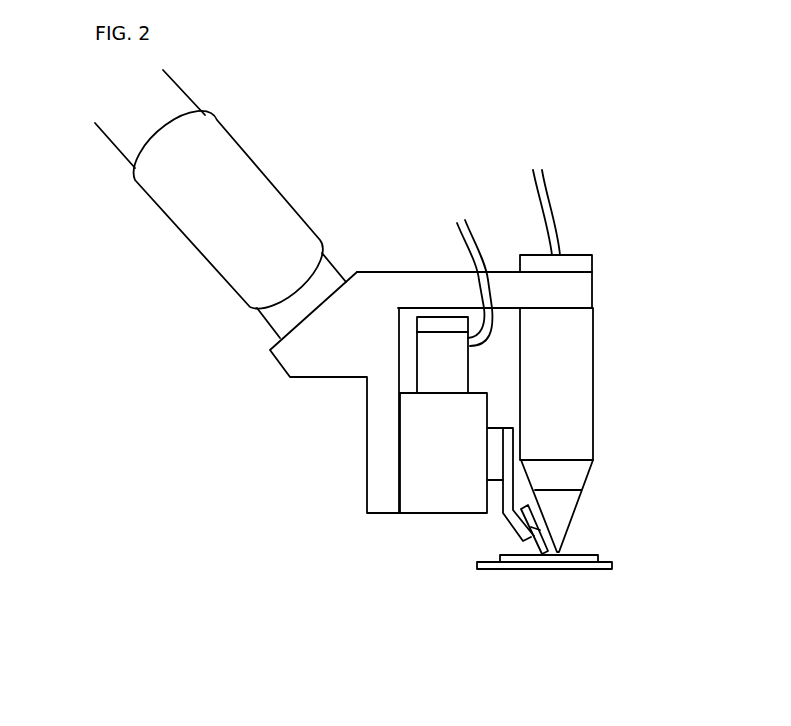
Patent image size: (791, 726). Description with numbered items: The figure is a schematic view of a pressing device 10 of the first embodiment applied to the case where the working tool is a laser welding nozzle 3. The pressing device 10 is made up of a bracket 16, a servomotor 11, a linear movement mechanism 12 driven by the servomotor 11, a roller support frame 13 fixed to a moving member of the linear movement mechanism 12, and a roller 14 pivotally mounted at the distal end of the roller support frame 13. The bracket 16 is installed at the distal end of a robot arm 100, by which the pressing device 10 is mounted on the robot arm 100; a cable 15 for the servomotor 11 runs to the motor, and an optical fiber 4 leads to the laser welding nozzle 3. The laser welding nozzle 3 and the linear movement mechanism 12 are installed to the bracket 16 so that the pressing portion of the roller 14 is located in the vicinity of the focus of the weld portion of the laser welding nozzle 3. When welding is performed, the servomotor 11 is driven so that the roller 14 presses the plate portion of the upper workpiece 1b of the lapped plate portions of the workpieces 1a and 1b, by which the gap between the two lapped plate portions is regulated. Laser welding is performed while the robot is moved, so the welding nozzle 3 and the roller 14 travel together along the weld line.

The robot arm 100 is at (260, 170).
The bracket 16 is at (273, 360).
The servomotor 11 is at (430, 347).
The linear movement mechanism 12 is at (422, 510).
The cable 15 is at (466, 226).
The optical fiber 4 is at (548, 195).
The laser welding nozzle 3 is at (587, 402).
The roller support frame 13 is at (504, 514).
The roller 14 is at (532, 546).
The upper workpiece 1b is at (587, 553).
The workpiece 1a is at (600, 570).
The pressing device 10 is at (427, 565).